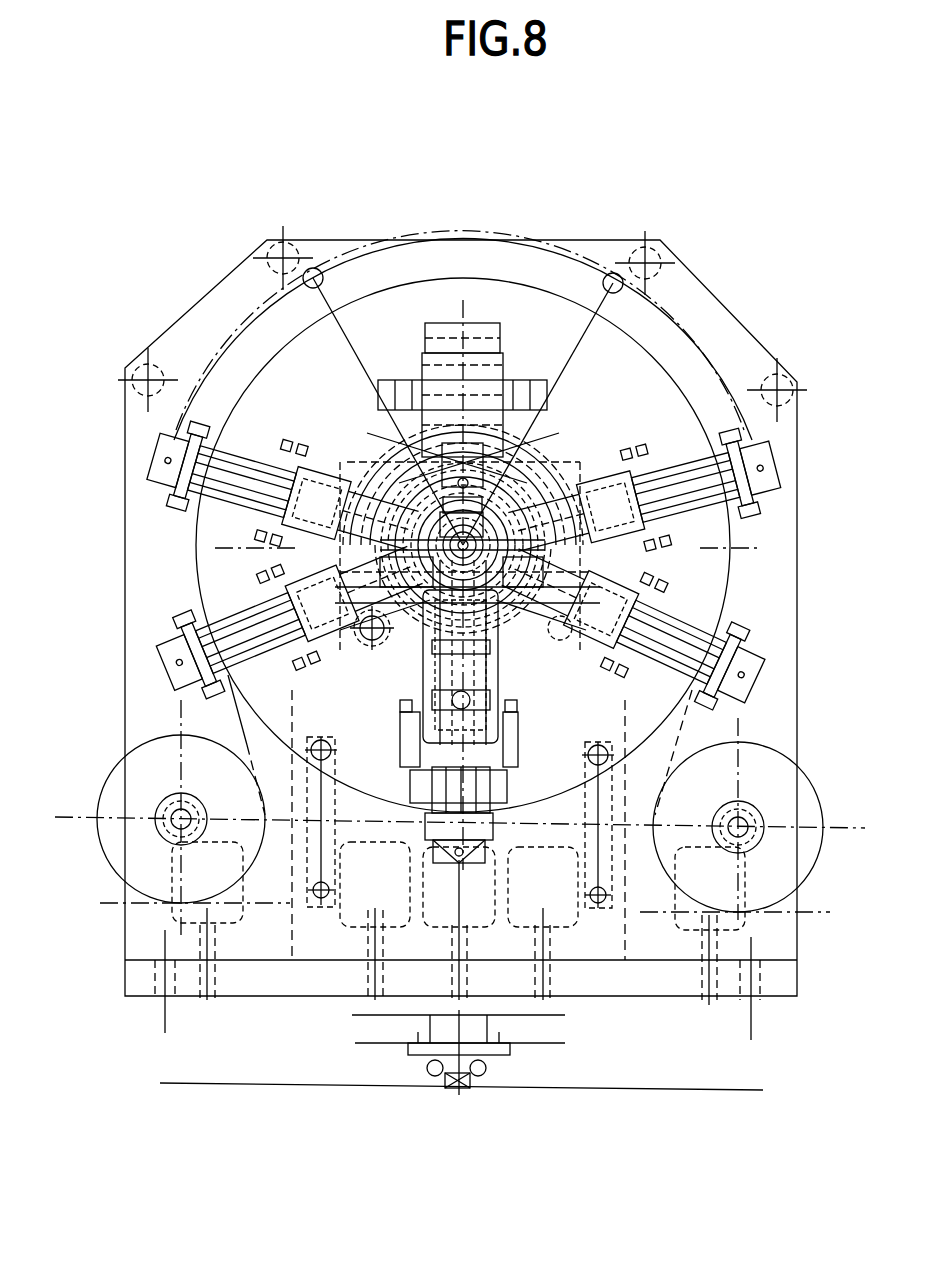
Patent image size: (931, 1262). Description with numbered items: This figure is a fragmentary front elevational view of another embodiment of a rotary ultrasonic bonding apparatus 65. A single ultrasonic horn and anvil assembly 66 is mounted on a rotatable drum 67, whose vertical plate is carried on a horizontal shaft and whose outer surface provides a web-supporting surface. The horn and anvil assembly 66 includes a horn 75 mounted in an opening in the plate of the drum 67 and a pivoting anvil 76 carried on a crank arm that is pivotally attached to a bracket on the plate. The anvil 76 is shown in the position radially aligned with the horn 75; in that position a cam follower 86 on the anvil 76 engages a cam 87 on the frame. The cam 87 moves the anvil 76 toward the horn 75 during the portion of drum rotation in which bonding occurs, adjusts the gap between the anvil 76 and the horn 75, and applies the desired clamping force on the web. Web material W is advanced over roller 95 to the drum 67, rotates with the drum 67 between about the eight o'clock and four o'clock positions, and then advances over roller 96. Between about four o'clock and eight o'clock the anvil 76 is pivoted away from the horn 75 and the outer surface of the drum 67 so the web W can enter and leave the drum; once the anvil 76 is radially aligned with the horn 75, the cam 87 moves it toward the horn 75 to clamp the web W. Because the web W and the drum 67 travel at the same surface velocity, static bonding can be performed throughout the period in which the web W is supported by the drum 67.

The rotary ultrasonic bonding apparatus 65 is at (620, 225).
The ultrasonic horn and anvil assembly 66 is at (467, 711).
The rotatable drum 67 is at (250, 380).
The horn 75 is at (513, 785).
The pivoting anvil 76 is at (505, 833).
The cam follower 86 is at (172, 678).
The cam 87 is at (405, 237).
The roller 95 is at (97, 848).
The roller 96 is at (673, 862).
The web material W is at (235, 710).